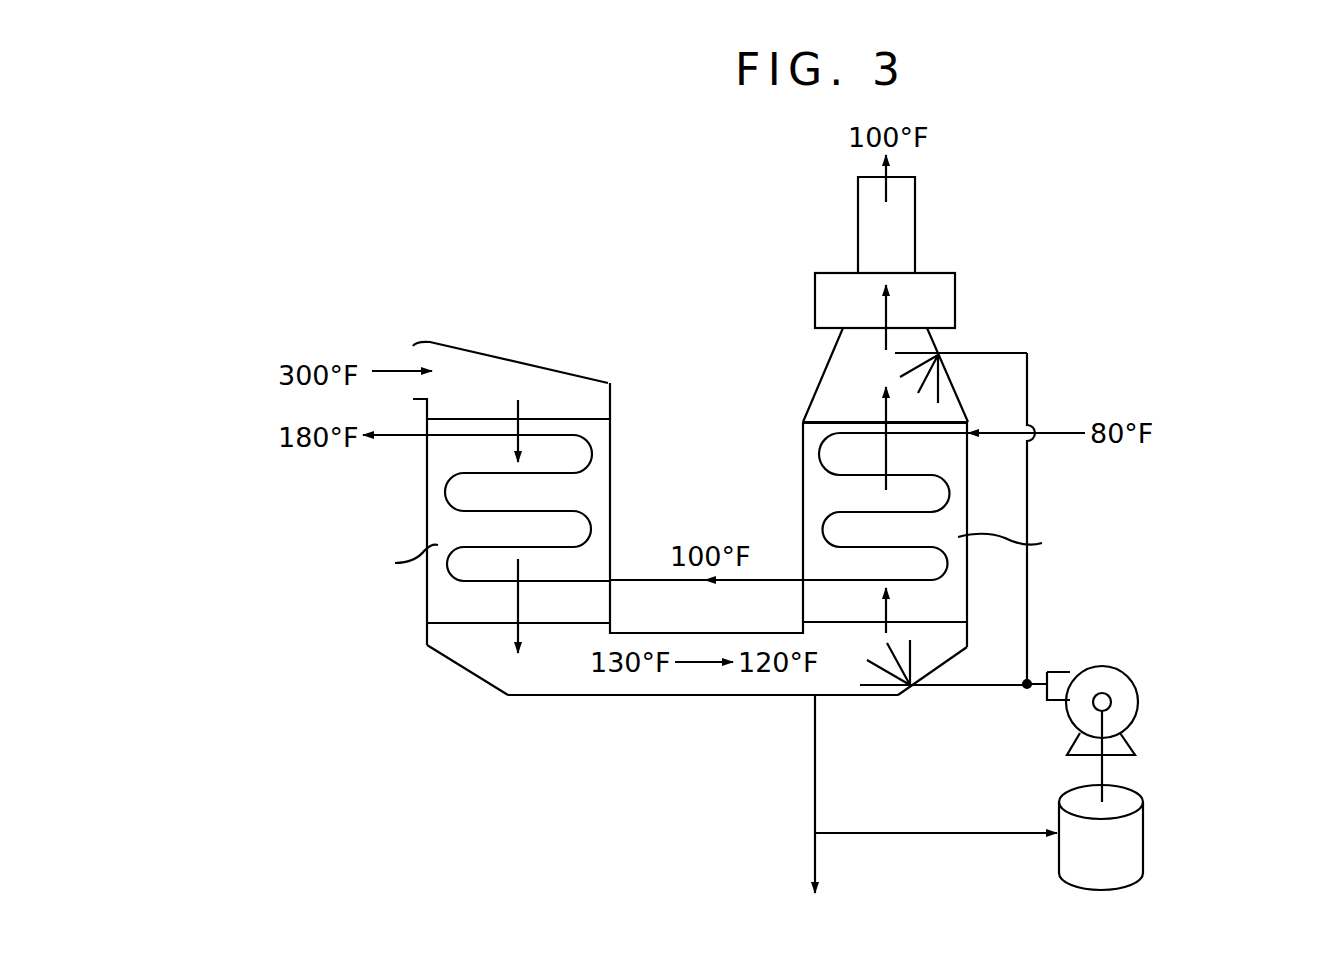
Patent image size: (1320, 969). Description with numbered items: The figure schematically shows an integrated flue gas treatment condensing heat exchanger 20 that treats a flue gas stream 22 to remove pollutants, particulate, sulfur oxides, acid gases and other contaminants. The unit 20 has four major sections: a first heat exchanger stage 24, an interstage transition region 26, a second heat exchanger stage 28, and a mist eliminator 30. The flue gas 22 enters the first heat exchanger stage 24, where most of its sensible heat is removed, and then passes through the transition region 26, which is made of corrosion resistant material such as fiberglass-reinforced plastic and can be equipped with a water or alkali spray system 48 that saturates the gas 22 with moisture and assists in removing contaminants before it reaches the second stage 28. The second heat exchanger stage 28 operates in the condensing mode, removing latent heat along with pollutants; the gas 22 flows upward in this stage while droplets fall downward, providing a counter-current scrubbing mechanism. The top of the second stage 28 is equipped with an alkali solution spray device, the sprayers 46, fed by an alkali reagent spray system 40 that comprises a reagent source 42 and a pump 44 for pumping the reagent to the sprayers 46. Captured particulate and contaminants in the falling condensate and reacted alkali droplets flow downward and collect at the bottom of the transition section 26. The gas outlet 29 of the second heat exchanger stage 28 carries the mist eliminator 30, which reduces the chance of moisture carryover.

The integrated flue gas treatment condensing heat exchanger 20 is at (680, 235).
The flue gas stream 22 is at (397, 371).
The first heat exchanger stage 24 is at (438, 510).
The interstage transition region 26 is at (688, 683).
The second heat exchanger stage 28 is at (960, 505).
The gas outlet 29 is at (837, 387).
The mist eliminator 30 is at (925, 290).
The alkali reagent spray system 40 is at (1170, 695).
The reagent source 42 is at (1123, 840).
The pump 44 is at (1105, 680).
The sprayers 46 is at (938, 355).
The water or alkali spray system 48 is at (910, 685).